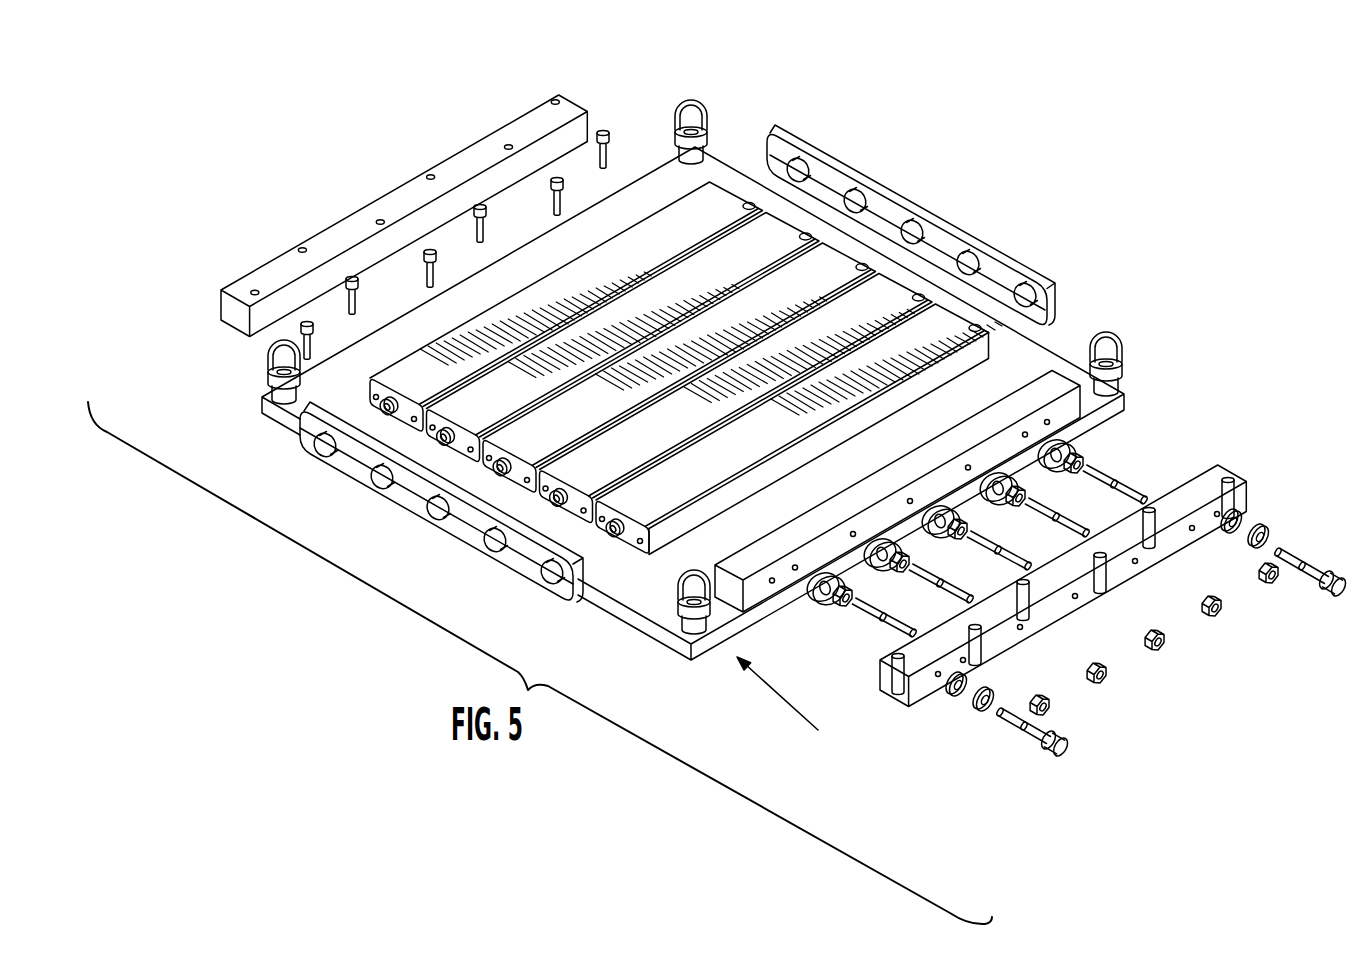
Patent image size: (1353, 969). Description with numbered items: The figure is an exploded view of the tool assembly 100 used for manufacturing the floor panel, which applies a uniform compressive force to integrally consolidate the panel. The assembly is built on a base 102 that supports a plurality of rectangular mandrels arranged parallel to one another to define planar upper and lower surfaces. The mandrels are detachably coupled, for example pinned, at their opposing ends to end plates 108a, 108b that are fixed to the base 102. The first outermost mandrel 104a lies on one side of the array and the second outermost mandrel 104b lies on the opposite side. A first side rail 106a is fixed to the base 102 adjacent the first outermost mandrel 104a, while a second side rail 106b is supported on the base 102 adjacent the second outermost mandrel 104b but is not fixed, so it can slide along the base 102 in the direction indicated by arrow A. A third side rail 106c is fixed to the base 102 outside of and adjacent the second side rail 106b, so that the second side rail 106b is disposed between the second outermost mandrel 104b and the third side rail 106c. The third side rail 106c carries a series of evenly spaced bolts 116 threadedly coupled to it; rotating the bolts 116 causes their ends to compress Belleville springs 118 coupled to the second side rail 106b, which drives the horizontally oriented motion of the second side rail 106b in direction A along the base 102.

The tool assembly 100 is at (740, 56).
The base 102 is at (652, 183).
The first outermost mandrel 104a is at (305, 428).
The second outermost mandrel 104b is at (653, 513).
The first side rail 106a is at (512, 132).
The second side rail 106b is at (1053, 387).
The third side rail 106c is at (1192, 526).
The end plate 108a is at (458, 532).
The end plate 108b is at (912, 203).
The bolts 116 is at (1310, 570).
The Belleville springs 118 is at (820, 598).